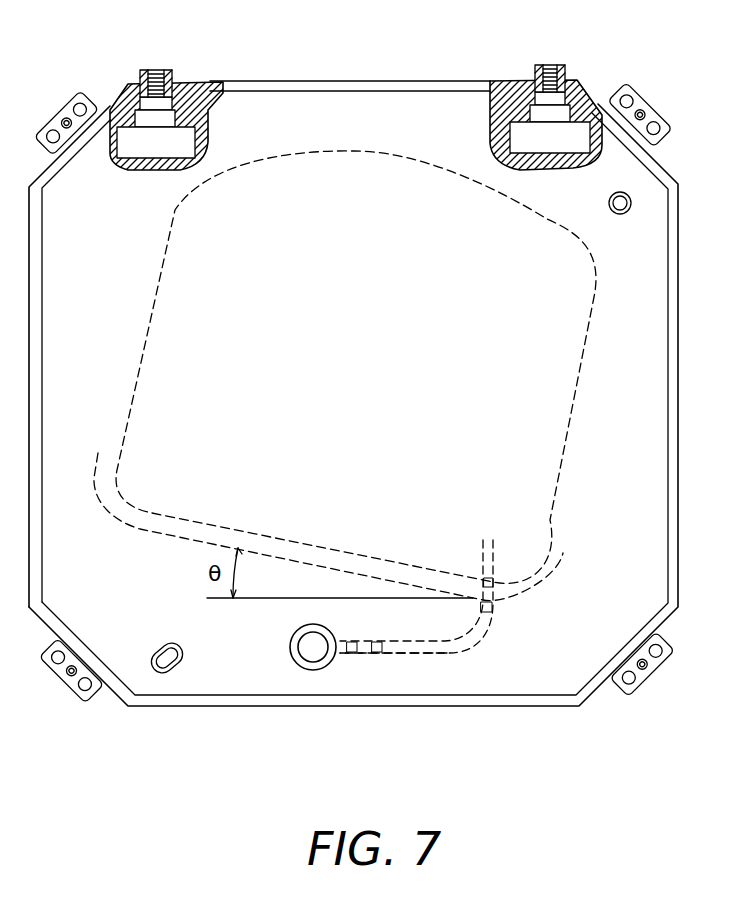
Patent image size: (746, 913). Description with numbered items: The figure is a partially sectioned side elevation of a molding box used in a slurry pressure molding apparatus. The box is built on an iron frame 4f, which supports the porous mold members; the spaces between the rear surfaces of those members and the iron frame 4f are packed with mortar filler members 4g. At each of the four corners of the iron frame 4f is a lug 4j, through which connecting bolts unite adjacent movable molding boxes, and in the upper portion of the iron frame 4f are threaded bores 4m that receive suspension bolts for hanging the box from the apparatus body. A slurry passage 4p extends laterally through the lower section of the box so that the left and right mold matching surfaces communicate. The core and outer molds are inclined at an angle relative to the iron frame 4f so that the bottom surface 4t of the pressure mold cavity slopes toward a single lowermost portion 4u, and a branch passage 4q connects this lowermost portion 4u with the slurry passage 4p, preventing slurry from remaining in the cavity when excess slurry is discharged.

The iron frame 4f is at (360, 81).
The filler member 4g is at (505, 84).
The threaded bore 4m is at (565, 78).
The lug 4j is at (85, 703).
The bottom surface 4t is at (333, 550).
The lowermost portion 4u is at (485, 542).
The slurry passage 4p is at (317, 655).
The branch passage 4q is at (443, 653).